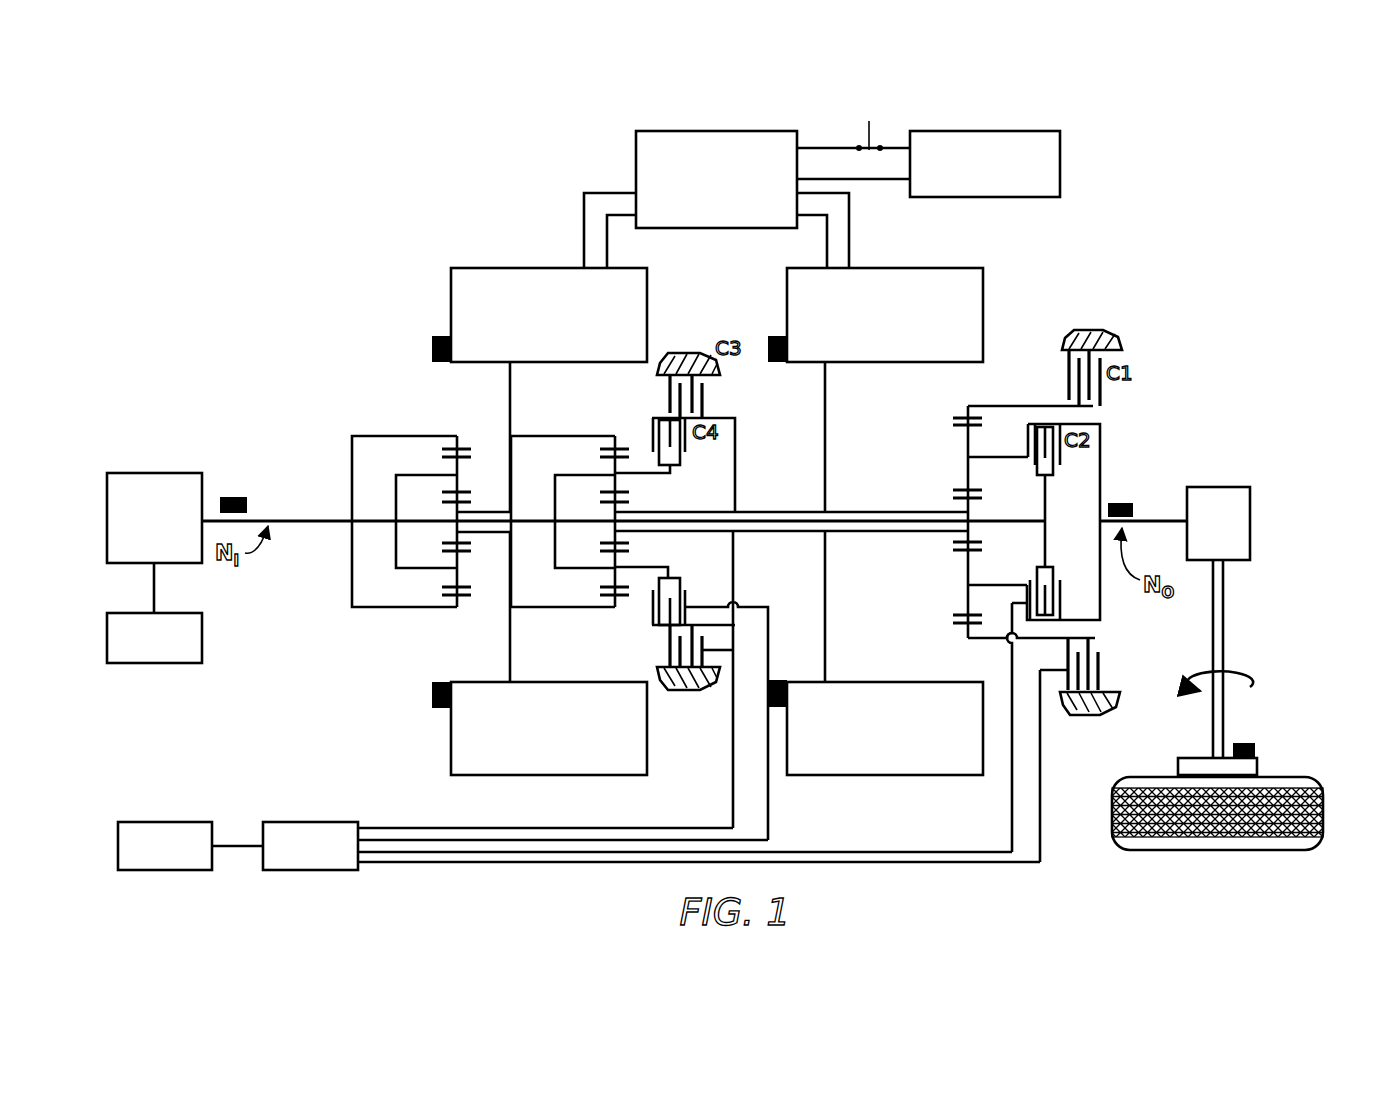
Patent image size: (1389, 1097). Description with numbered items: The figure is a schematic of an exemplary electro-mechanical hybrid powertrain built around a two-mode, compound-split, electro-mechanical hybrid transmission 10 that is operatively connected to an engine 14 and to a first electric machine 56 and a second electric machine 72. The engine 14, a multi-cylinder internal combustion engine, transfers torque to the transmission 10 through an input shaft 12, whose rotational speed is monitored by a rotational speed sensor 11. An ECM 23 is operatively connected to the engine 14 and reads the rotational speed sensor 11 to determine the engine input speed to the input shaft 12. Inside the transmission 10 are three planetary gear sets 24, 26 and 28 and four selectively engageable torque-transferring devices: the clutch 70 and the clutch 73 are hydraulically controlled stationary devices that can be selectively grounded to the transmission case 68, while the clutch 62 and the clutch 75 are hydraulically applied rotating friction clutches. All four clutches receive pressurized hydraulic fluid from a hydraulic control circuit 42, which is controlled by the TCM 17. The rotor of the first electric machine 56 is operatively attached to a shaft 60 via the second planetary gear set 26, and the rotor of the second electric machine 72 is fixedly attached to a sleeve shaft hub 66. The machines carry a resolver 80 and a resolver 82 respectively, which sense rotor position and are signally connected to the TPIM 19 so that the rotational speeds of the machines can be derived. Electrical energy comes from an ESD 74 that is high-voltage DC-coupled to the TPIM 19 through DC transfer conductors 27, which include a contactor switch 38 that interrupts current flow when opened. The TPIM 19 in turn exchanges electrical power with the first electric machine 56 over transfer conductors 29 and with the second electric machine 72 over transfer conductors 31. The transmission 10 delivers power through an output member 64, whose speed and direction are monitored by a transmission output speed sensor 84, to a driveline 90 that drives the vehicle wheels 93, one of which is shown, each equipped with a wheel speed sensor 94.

The electro-mechanical hybrid transmission 10 is at (413, 232).
The rotational speed sensor 11 is at (233, 497).
The input shaft 12 is at (313, 517).
The engine 14 is at (160, 473).
The transmission control module 17 is at (150, 822).
The transmission power inverter control module 19 is at (636, 148).
The ECM 23 is at (200, 657).
The first planetary gear set 24 is at (447, 432).
The second planetary gear set 26 is at (612, 432).
The DC transfer conductors 27 is at (815, 146).
The third planetary gear set 28 is at (960, 408).
The transfer conductors 29 is at (584, 225).
The transfer conductors 31 is at (849, 225).
The contactor switch 38 is at (874, 128).
The hydraulic control circuit 42 is at (280, 822).
The first electric machine 56 is at (451, 305).
The shaft 60 is at (1017, 520).
The clutch C2 62 is at (1060, 465).
The output member 64 is at (1183, 500).
The sleeve shaft hub 66 is at (862, 512).
The transmission case 68 is at (686, 353).
The clutch C1 70 is at (1063, 373).
The second electric machine 72 is at (983, 281).
The clutch C3 73 is at (706, 398).
The electrical energy storage device 74 is at (1060, 148).
The clutch C4 75 is at (691, 458).
The resolver 80 is at (432, 352).
The resolver 82 is at (776, 336).
The transmission output speed sensor 84 is at (1125, 503).
The driveline 90 is at (1240, 669).
The vehicle wheel 93 is at (1178, 766).
The wheel speed sensor 94 is at (1243, 743).